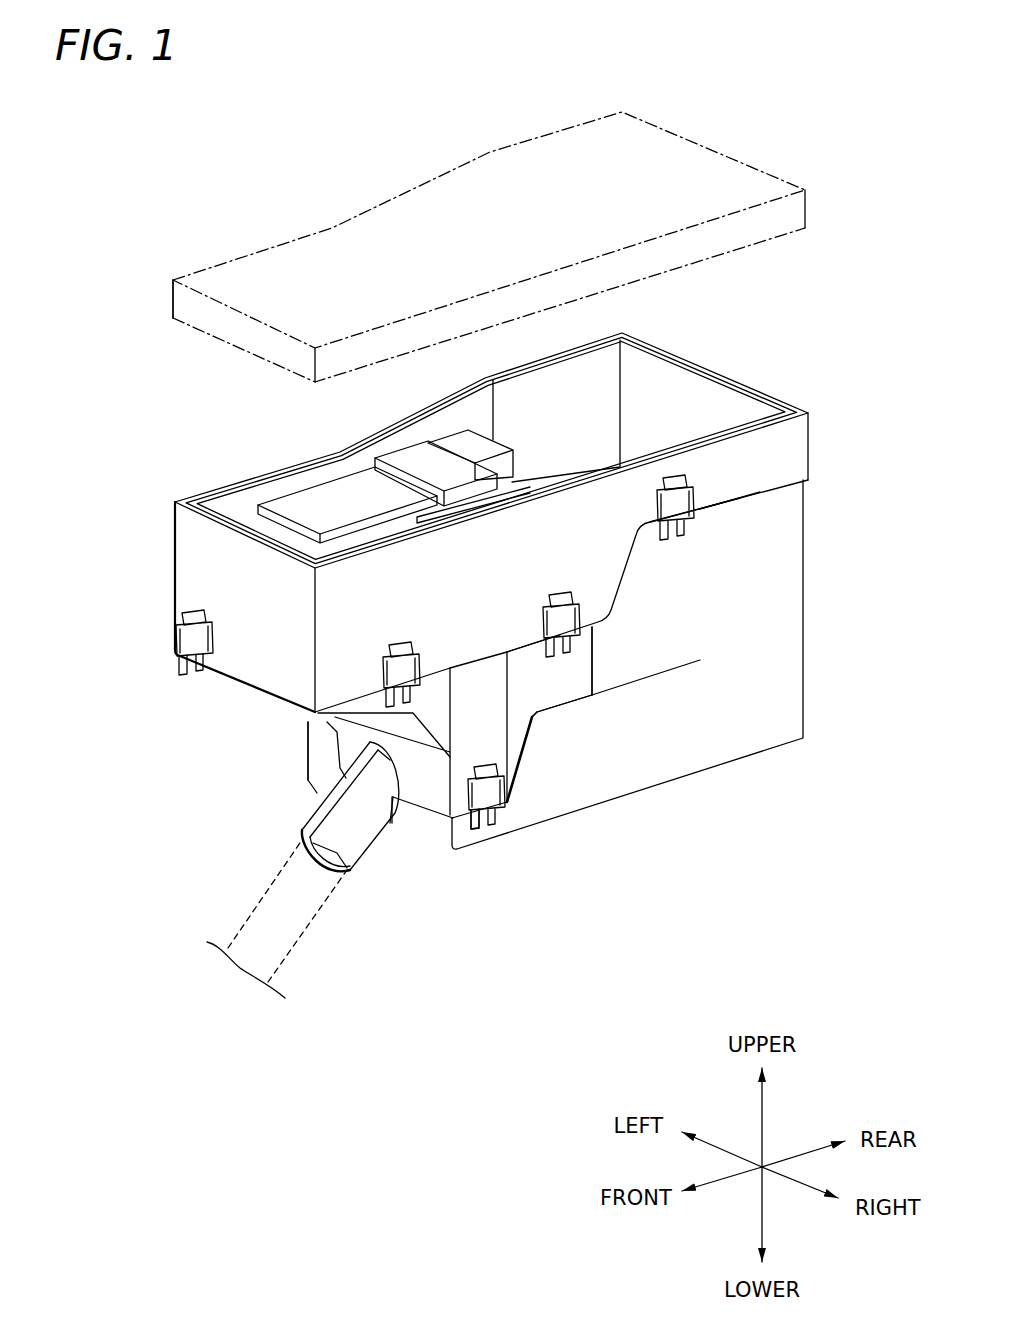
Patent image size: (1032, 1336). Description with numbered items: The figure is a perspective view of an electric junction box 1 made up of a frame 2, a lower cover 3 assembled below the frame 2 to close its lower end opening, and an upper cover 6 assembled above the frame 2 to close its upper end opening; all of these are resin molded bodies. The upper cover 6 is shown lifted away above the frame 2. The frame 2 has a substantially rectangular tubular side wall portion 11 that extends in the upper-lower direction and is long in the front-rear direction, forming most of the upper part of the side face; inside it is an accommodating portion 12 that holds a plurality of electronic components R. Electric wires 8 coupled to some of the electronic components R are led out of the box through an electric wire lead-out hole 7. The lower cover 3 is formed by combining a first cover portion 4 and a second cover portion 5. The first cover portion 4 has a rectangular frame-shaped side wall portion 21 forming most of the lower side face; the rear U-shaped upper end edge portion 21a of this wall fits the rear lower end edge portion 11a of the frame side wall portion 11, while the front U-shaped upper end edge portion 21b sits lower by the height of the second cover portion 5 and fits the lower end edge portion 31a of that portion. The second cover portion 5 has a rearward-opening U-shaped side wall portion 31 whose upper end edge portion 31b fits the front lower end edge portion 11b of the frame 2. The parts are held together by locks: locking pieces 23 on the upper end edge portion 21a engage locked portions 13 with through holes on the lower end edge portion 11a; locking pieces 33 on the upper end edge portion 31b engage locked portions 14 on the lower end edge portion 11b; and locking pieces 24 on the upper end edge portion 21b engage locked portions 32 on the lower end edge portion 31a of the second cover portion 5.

The electric junction box 1 is at (70, 298).
The frame 2 is at (148, 528).
The lower cover 3 is at (106, 692).
The first cover portion 4 is at (315, 771).
The second cover portion 5 is at (345, 731).
The upper cover 6 is at (150, 310).
The electric wire lead-out hole 7 is at (372, 866).
The electric wires 8 is at (310, 945).
The side wall portion 11 is at (787, 453).
The lower end edge portion 11a is at (713, 512).
The lower end edge portion 11b is at (478, 735).
The accommodating portion 12 is at (370, 523).
The locked portions 13 is at (658, 516).
The locked portions 14 is at (207, 654).
The side wall portion 21 is at (792, 683).
The upper end edge portion 21a is at (728, 500).
The upper end edge portion 21b is at (547, 705).
The locking pieces 23 is at (675, 478).
The locking pieces 24 is at (480, 766).
The side wall portion 31 is at (498, 730).
The lower end edge portion 31a is at (567, 710).
The upper end edge portion 31b is at (522, 642).
The locked portions 32 is at (473, 830).
The locking pieces 33 is at (195, 612).
The electronic components R is at (413, 460).